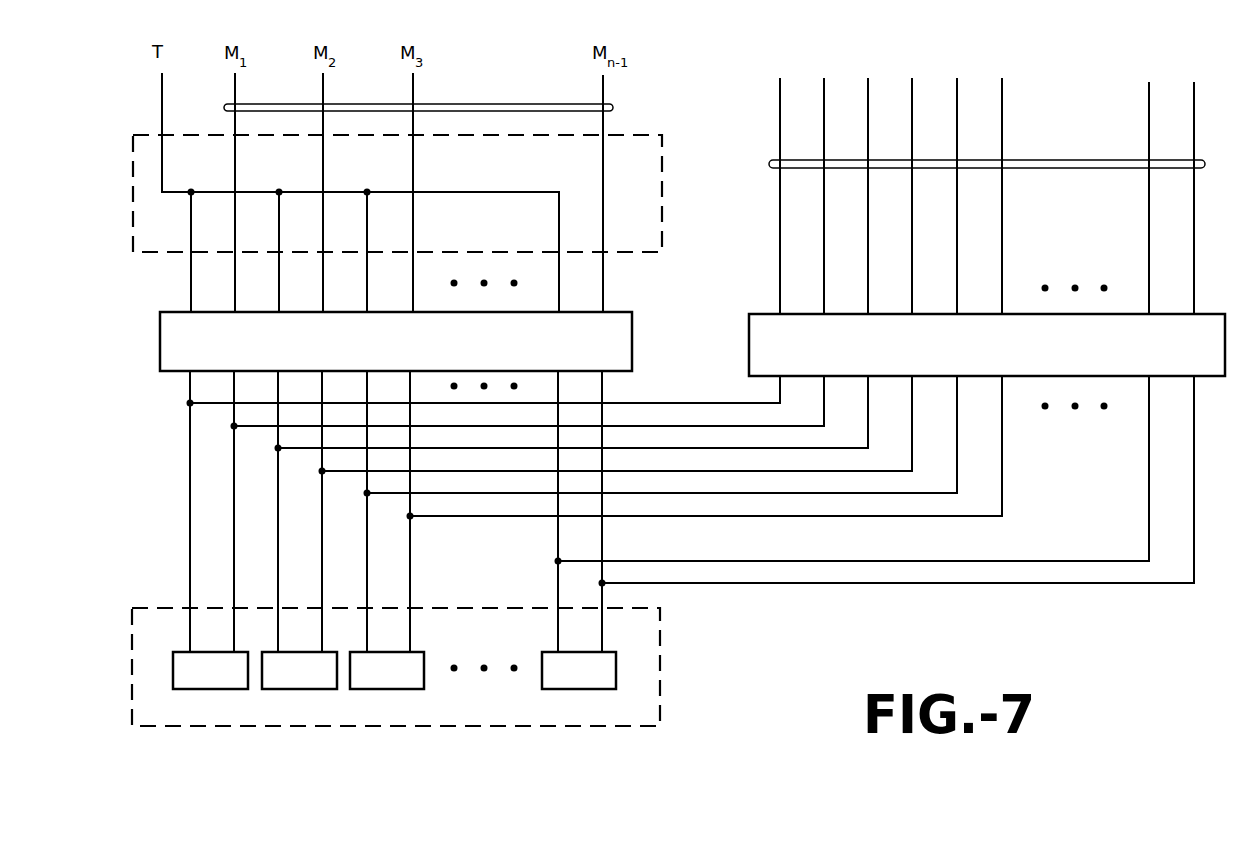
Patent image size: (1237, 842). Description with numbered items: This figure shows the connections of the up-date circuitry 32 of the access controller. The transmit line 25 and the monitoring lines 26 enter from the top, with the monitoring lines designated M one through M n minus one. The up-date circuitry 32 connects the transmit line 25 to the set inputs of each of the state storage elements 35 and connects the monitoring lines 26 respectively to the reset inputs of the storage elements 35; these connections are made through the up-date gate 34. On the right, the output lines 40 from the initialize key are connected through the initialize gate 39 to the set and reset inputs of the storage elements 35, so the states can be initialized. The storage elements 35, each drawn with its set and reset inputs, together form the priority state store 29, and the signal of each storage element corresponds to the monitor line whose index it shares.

The transmit line 25 is at (162, 110).
The monitoring lines 26 is at (613, 107).
The priority state store 29 is at (660, 675).
The up-date circuitry 32 is at (662, 195).
The up-date gate 34 is at (632, 348).
The state storage elements 35 is at (211, 689).
The initialize gate 39 is at (749, 335).
The output lines 40 is at (769, 163).